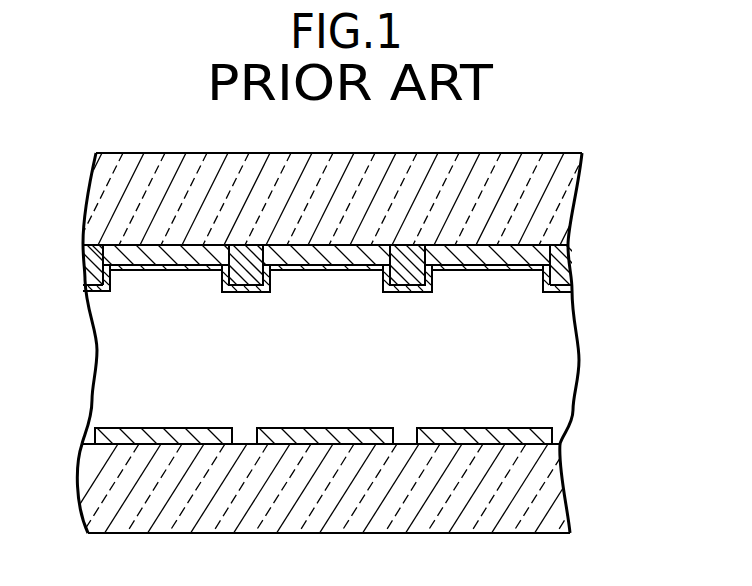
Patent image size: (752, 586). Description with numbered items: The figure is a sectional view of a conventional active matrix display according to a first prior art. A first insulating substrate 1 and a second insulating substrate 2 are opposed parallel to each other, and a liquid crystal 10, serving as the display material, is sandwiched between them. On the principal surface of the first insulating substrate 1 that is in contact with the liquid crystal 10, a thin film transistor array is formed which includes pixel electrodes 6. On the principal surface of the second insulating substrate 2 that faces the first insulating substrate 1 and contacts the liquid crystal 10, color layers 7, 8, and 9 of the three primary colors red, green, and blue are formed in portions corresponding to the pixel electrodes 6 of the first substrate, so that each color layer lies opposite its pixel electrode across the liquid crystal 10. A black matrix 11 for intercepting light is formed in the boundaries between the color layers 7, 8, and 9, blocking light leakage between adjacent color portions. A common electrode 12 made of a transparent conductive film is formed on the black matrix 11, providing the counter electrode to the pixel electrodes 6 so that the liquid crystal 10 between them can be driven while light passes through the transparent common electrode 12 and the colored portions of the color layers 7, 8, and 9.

The first insulating substrate 1 is at (550, 475).
The second insulating substrate 2 is at (572, 190).
The pixel electrodes 6 is at (528, 430).
The color layer 7 is at (148, 270).
The color layer 8 is at (297, 270).
The color layer 9 is at (456, 270).
The liquid crystal 10 is at (563, 368).
The black matrix 11 is at (353, 290).
The common electrode 12 is at (514, 270).